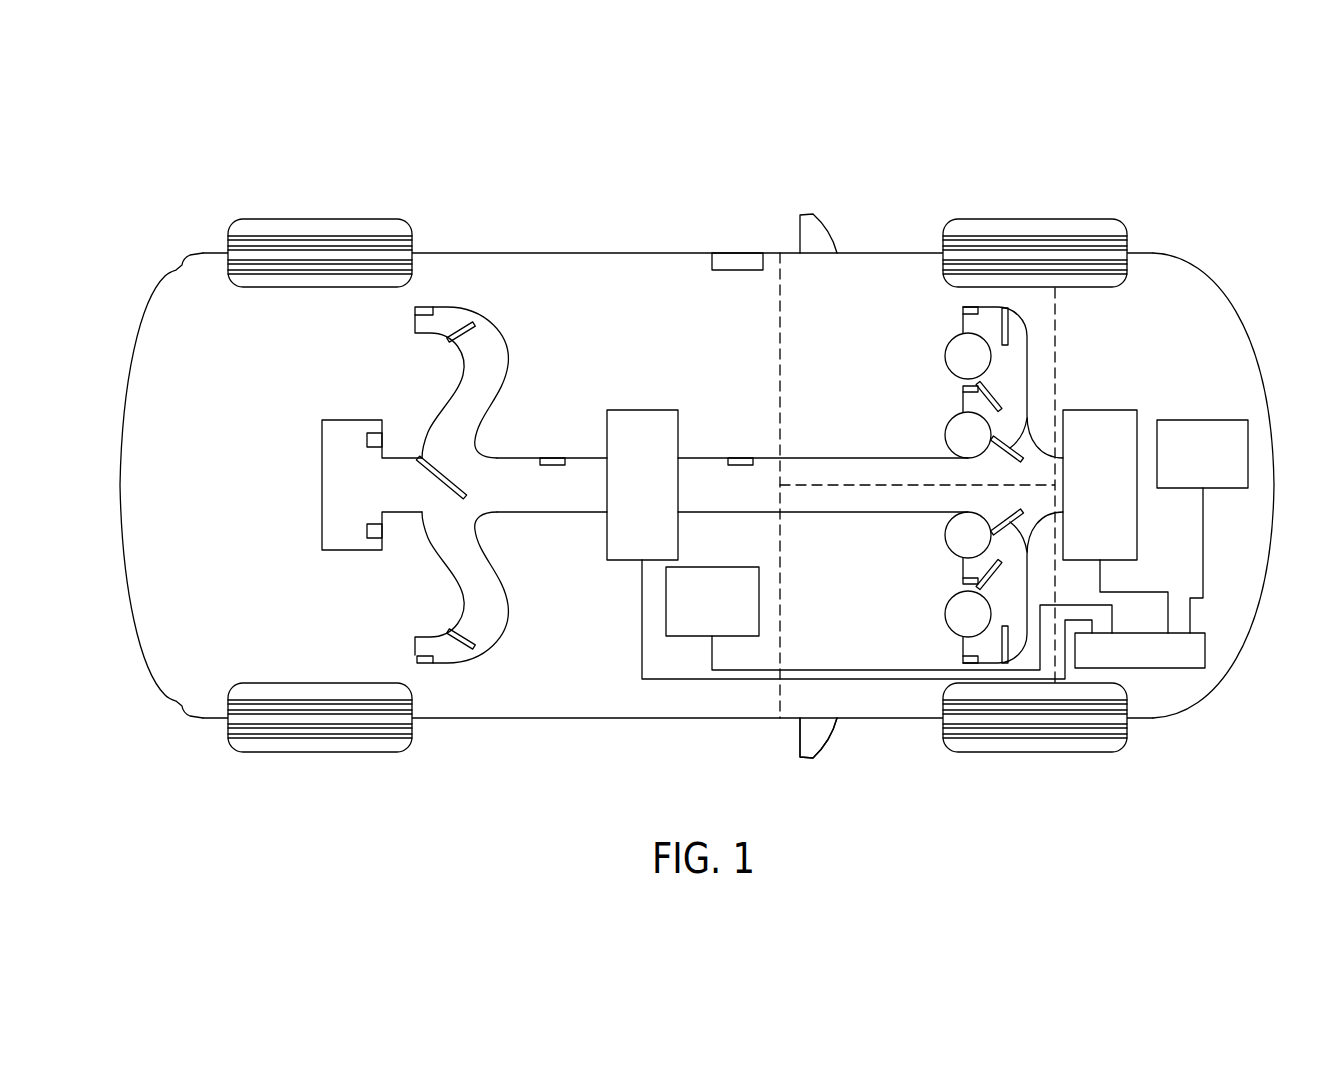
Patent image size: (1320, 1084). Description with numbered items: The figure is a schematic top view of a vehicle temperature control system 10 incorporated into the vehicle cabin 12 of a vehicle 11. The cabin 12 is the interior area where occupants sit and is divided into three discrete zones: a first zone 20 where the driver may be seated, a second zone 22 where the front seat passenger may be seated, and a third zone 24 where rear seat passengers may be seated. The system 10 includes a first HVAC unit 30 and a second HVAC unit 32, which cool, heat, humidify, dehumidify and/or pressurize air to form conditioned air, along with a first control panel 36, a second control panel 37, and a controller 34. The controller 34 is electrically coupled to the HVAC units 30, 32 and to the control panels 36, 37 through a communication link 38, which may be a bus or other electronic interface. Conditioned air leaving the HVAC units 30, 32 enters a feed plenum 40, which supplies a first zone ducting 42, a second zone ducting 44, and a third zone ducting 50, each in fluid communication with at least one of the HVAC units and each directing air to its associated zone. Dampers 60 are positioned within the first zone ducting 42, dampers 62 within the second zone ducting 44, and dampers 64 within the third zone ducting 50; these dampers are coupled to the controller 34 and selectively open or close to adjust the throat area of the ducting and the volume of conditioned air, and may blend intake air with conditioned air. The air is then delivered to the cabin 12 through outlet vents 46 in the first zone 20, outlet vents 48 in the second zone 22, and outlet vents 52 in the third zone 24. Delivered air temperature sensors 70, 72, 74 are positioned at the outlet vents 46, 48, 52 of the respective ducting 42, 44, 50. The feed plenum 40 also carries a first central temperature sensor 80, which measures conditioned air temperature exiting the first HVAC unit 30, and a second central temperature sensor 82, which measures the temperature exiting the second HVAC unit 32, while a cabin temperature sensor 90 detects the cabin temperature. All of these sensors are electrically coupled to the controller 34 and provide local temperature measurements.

The vehicle temperature control system 10 is at (1198, 148).
The vehicle 11 is at (1222, 243).
The vehicle cabin 12 is at (716, 420).
The first zone 20 is at (887, 232).
The second zone 22 is at (888, 738).
The third zone 24 is at (562, 225).
The first HVAC unit 30 is at (1113, 410).
The second HVAC unit 32 is at (657, 410).
The controller 34 is at (1205, 650).
The first control panel 36 is at (1217, 420).
The second control panel 37 is at (760, 600).
The communication link 38 is at (642, 615).
The feed plenum 40 is at (848, 513).
The first zone ducting 42 is at (1028, 342).
The second zone ducting 44 is at (1028, 570).
The outlet vents 46 is at (958, 333).
The outlet vents 48 is at (958, 570).
The third zone ducting 50 is at (508, 347).
The outlet vents 52 is at (413, 322).
The dampers 60 is at (1000, 343).
The dampers 62 is at (1000, 515).
The dampers 64 is at (472, 337).
The delivered air temperature sensors 70 is at (960, 309).
The delivered air temperature sensors 72 is at (960, 584).
The delivered air temperature sensors 74 is at (412, 333).
The first central temperature sensor 80 is at (740, 466).
The second central temperature sensor 82 is at (552, 466).
The cabin temperature sensor 90 is at (736, 271).